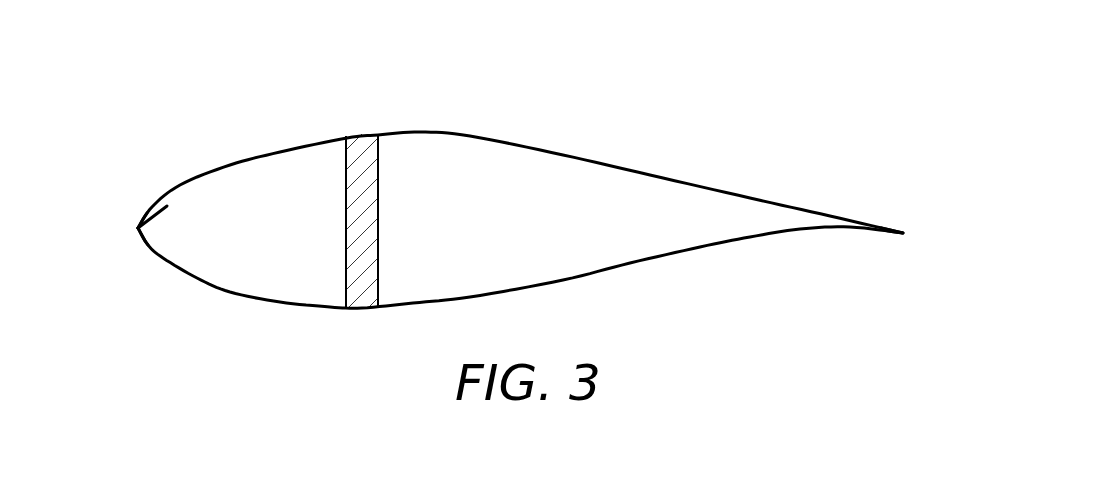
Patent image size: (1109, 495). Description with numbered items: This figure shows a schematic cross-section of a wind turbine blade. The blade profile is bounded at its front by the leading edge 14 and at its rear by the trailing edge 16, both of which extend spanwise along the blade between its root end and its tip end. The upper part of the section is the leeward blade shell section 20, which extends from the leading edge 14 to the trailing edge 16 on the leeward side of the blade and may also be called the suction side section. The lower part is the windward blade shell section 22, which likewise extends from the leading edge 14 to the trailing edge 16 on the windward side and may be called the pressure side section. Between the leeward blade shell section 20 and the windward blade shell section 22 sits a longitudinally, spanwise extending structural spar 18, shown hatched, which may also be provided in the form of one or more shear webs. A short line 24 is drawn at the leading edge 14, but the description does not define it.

The leading edge 14 is at (138, 228).
The trailing edge 16 is at (905, 233).
The structural spar 18 is at (379, 217).
The leeward blade shell section 20 is at (564, 154).
The windward blade shell section 22 is at (633, 265).
The leading edge line 24 is at (167, 207).